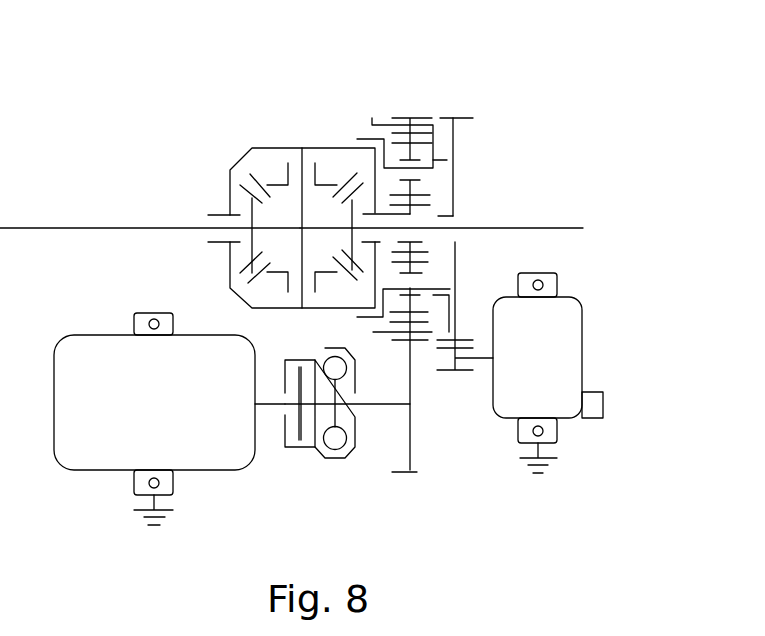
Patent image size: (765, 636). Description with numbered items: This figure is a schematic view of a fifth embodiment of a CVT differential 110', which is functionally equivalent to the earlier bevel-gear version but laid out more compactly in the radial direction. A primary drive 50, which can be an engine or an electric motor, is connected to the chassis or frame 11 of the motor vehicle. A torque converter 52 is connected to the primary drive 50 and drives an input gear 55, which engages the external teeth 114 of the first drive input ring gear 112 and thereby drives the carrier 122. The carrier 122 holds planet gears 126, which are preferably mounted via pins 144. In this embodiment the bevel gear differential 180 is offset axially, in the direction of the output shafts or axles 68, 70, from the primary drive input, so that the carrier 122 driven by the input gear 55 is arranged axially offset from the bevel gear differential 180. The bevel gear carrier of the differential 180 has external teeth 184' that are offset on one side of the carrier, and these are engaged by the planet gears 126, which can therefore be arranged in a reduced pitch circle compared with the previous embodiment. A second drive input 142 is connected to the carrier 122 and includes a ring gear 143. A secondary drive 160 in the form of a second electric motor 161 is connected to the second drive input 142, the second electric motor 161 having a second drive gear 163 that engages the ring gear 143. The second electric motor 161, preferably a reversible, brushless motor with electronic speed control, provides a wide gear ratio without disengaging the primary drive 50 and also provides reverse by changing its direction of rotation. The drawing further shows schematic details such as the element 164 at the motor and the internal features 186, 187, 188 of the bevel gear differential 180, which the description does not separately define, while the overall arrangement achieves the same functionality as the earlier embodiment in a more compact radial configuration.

The chassis or frame 11 is at (153, 528).
The primary drive 50 is at (72, 470).
The torque converter 52 is at (325, 452).
The input gear 55 is at (416, 440).
The output shaft or axle 68 is at (49, 226).
The output shaft or axle 70 is at (583, 228).
The CVT differential 110' is at (654, 149).
The first drive input ring gear 112 is at (372, 118).
The external teeth 114 is at (412, 118).
The carrier 122 is at (453, 214).
The planet gears 126 is at (415, 152).
The second drive input 142 is at (456, 136).
The ring gear 143 is at (470, 118).
The pins 144 is at (432, 170).
The secondary drive 160 is at (584, 345).
The second electric motor 161 is at (572, 308).
The second drive gear 163 is at (467, 372).
The motor connector 164 is at (603, 405).
The bevel gear differential 180 is at (240, 153).
The external teeth 184' is at (452, 291).
The gear carrier 186 is at (268, 185).
The central web 187 is at (302, 160).
The gear teeth 188 is at (352, 200).